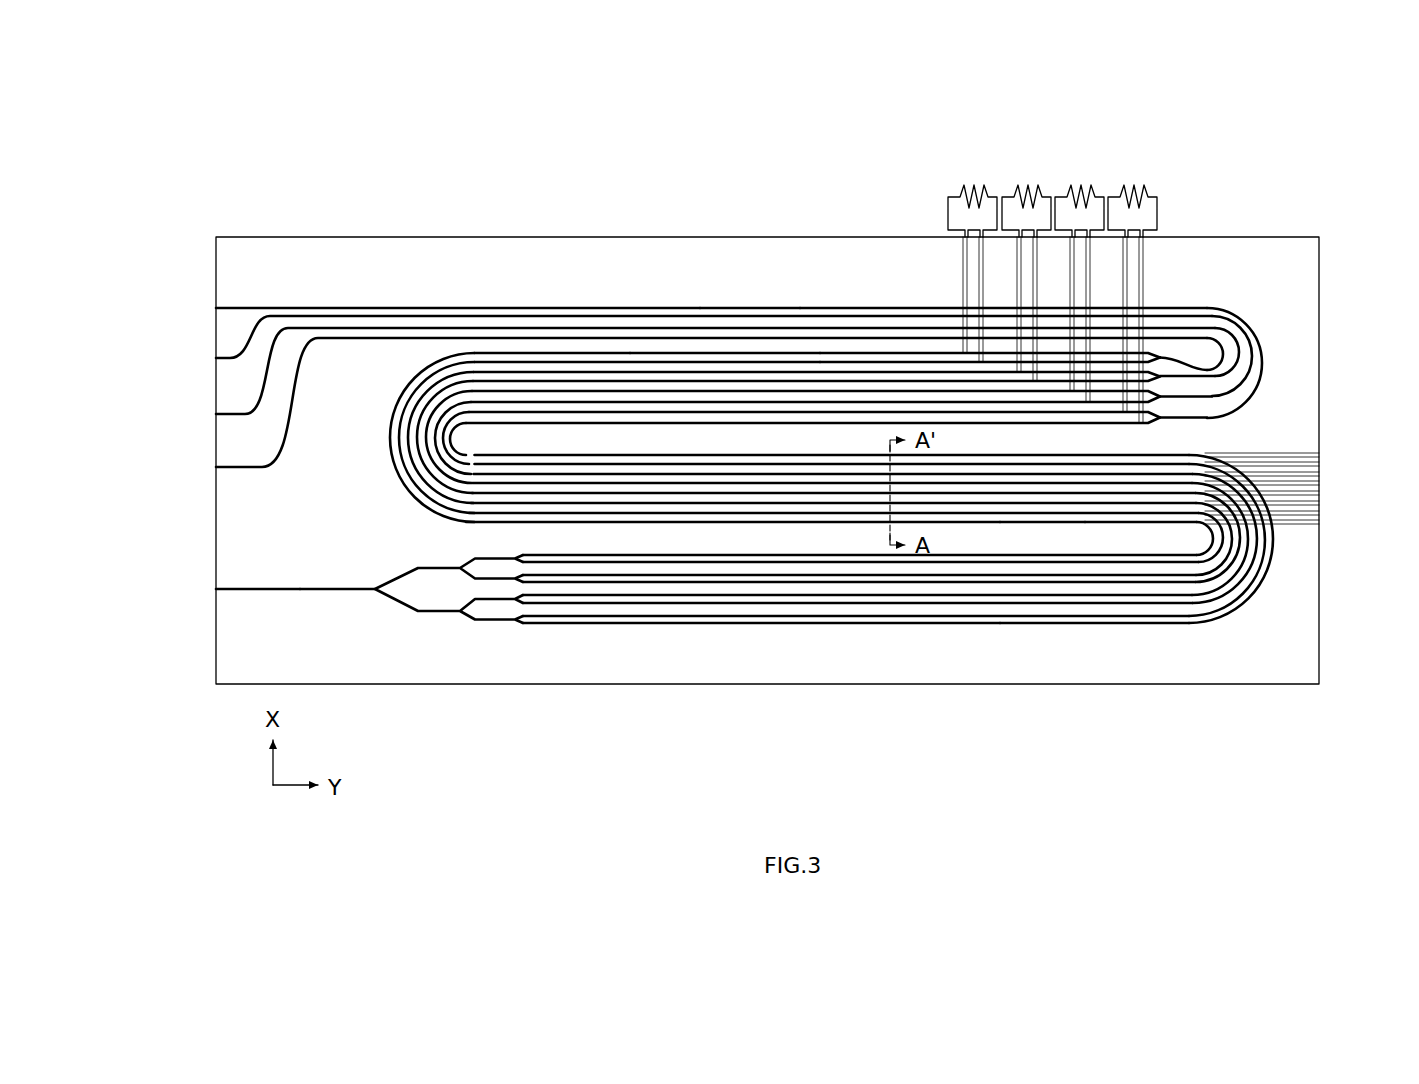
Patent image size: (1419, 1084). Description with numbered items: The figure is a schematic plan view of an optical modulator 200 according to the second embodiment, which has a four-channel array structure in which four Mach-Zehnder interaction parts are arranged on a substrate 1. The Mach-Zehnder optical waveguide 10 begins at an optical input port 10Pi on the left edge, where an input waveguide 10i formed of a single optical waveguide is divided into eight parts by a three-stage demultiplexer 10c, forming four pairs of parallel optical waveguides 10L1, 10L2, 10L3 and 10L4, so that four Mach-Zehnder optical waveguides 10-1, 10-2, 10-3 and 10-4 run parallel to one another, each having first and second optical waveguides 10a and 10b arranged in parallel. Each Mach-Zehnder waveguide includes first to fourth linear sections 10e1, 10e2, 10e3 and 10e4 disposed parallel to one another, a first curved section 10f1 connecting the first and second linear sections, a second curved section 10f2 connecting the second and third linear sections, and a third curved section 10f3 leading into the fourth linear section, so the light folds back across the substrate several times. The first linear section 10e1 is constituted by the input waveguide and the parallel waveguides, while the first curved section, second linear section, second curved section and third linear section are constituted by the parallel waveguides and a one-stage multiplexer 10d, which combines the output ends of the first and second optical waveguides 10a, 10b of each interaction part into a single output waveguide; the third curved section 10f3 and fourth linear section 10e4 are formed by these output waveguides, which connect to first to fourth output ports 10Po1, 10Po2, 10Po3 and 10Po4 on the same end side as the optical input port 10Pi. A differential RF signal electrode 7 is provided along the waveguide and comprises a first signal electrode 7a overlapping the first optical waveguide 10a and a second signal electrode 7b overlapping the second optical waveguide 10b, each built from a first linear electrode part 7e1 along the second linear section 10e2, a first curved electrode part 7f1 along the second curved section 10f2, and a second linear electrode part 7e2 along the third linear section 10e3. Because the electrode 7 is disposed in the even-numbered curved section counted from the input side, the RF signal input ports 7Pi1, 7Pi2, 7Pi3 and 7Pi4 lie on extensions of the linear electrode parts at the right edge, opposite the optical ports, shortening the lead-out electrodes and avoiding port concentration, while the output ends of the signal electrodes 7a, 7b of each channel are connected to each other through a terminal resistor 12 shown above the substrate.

The optical modulator 200 is at (629, 149).
The substrate 1 is at (297, 237).
The Mach-Zehnder optical waveguide 10 is at (553, 627).
The optical input port 10Pi is at (230, 590).
The input waveguide 10i is at (309, 588).
The three-stage demultiplexer 10c is at (385, 624).
The Mach-Zehnder optical waveguide 10-1 is at (700, 525).
The Mach-Zehnder optical waveguide 10-2 is at (668, 503).
The Mach-Zehnder optical waveguide 10-3 is at (637, 483).
The Mach-Zehnder optical waveguide 10-4 is at (605, 463).
The first optical waveguide 10a is at (755, 625).
The second optical waveguide 10b is at (799, 617).
The parallel optical waveguides 10L1 is at (852, 738).
The parallel optical waveguides 10L2 is at (879, 606).
The parallel optical waveguides 10L3 is at (921, 587).
The parallel optical waveguides 10L4 is at (967, 567).
The first linear section 10e1 is at (1040, 630).
The second linear section 10e2 is at (1055, 530).
The third linear section 10e3 is at (668, 350).
The fourth linear section 10e4 is at (747, 304).
The first curved section 10f1 is at (1254, 608).
The second curved section 10f2 is at (380, 442).
The third curved section 10f3 is at (1253, 326).
The one-stage multiplexer 10d is at (1170, 423).
The first output port 10Po1 is at (675, 308).
The second output port 10Po2 is at (677, 343).
The third output port 10Po3 is at (679, 377).
The fourth output port 10Po4 is at (675, 409).
The differential RF signal electrode 7 is at (937, 191).
The first signal electrode 7a is at (856, 352).
The second signal electrode 7b is at (882, 348).
The first linear electrode part 7e1 is at (1115, 530).
The second linear electrode part 7e2 is at (598, 350).
The first curved electrode part 7f1 is at (380, 470).
The RF signal input port 7Pi1 is at (1321, 453).
The RF signal input port 7Pi2 is at (1321, 472).
The RF signal input port 7Pi3 is at (1321, 491).
The RF signal input port 7Pi4 is at (1321, 511).
The terminal resistor 12 is at (980, 186).